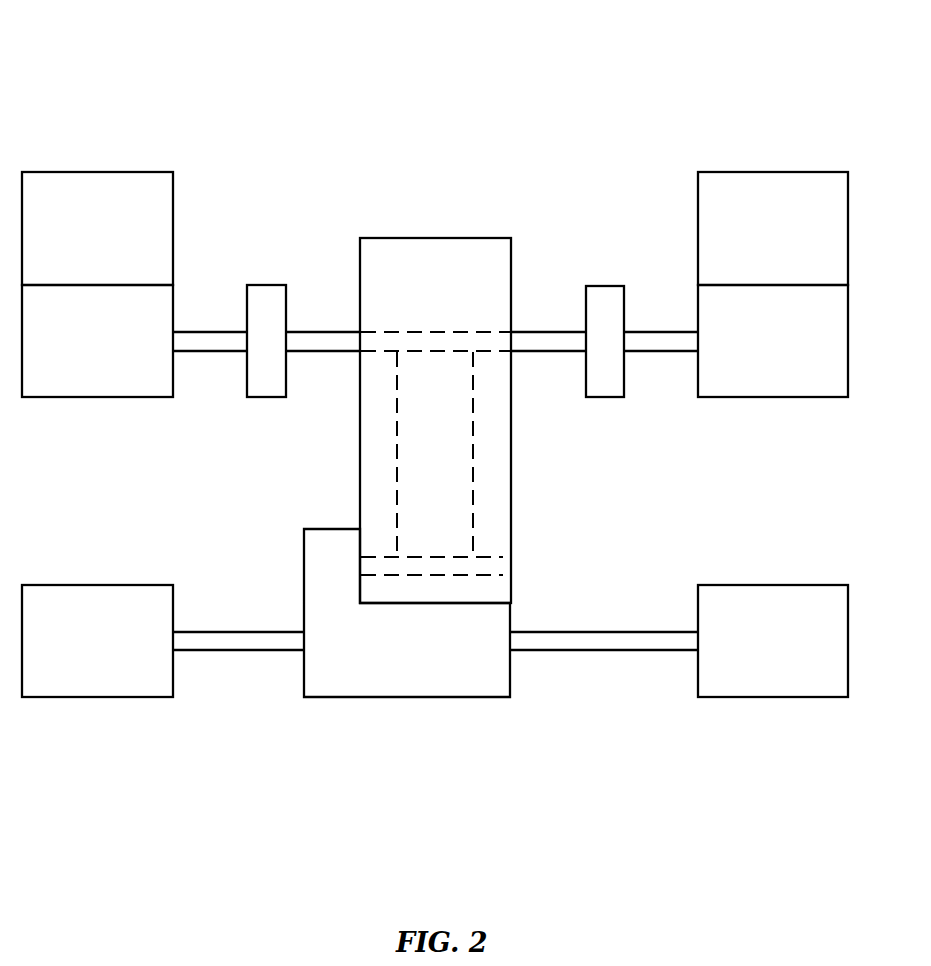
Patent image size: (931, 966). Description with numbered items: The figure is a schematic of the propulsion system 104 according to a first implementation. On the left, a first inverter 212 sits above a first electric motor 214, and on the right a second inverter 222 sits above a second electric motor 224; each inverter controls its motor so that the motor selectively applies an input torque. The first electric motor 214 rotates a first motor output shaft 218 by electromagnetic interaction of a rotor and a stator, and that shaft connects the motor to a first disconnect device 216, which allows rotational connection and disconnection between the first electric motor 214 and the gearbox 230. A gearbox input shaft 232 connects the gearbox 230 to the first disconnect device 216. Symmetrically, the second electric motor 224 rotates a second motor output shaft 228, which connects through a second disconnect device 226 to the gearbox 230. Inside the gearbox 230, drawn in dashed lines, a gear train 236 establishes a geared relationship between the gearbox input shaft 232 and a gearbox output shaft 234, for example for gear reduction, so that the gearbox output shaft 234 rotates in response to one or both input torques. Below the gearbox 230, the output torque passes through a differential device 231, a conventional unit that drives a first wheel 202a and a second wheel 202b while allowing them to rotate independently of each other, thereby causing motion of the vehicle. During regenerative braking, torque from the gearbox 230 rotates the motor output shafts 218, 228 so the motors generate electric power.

The propulsion system 104 is at (92, 50).
The first inverter 212 is at (62, 172).
The first electric motor 214 is at (60, 397).
The first disconnect device 216 is at (266, 285).
The first motor output shaft 218 is at (212, 332).
The gearbox 230 is at (474, 238).
The gearbox input shaft 232 is at (435, 332).
The gearbox output shaft 234 is at (500, 557).
The gear train 236 is at (473, 453).
The second disconnect device 226 is at (604, 286).
The second motor output shaft 228 is at (660, 332).
The second inverter 222 is at (812, 172).
The second electric motor 224 is at (810, 397).
The differential device 231 is at (473, 697).
The first wheel 202a is at (60, 697).
The second wheel 202b is at (810, 697).